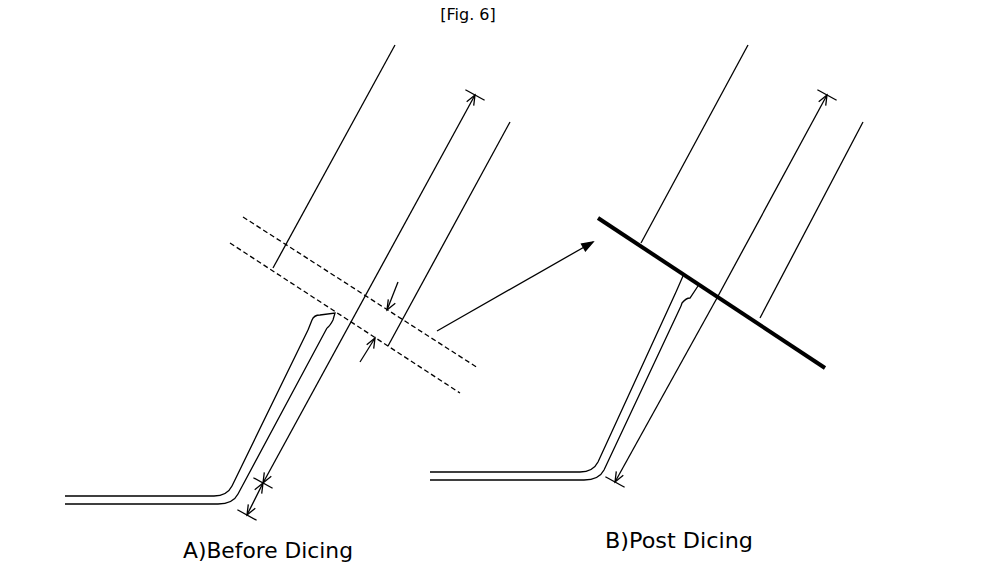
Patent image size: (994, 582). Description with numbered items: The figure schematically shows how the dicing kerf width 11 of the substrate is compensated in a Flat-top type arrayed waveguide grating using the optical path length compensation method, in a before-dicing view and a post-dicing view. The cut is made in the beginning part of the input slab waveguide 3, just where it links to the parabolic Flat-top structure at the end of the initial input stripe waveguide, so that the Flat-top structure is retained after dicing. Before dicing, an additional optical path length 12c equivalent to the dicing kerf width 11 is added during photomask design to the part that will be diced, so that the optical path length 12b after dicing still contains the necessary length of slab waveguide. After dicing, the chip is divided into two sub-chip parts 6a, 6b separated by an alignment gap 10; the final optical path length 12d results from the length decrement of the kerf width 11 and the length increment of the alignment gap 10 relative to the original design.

The input slab waveguide 3 is at (373, 145).
The dicing kerf width 11 is at (388, 334).
The optical path length after dicing 12b is at (323, 398).
The additional optical path length 12c is at (267, 500).
The final optical path length 12d is at (678, 408).
The sub-chip part 6a is at (619, 381).
The sub-chip part 6b is at (790, 203).
The alignment gap 10 is at (801, 372).